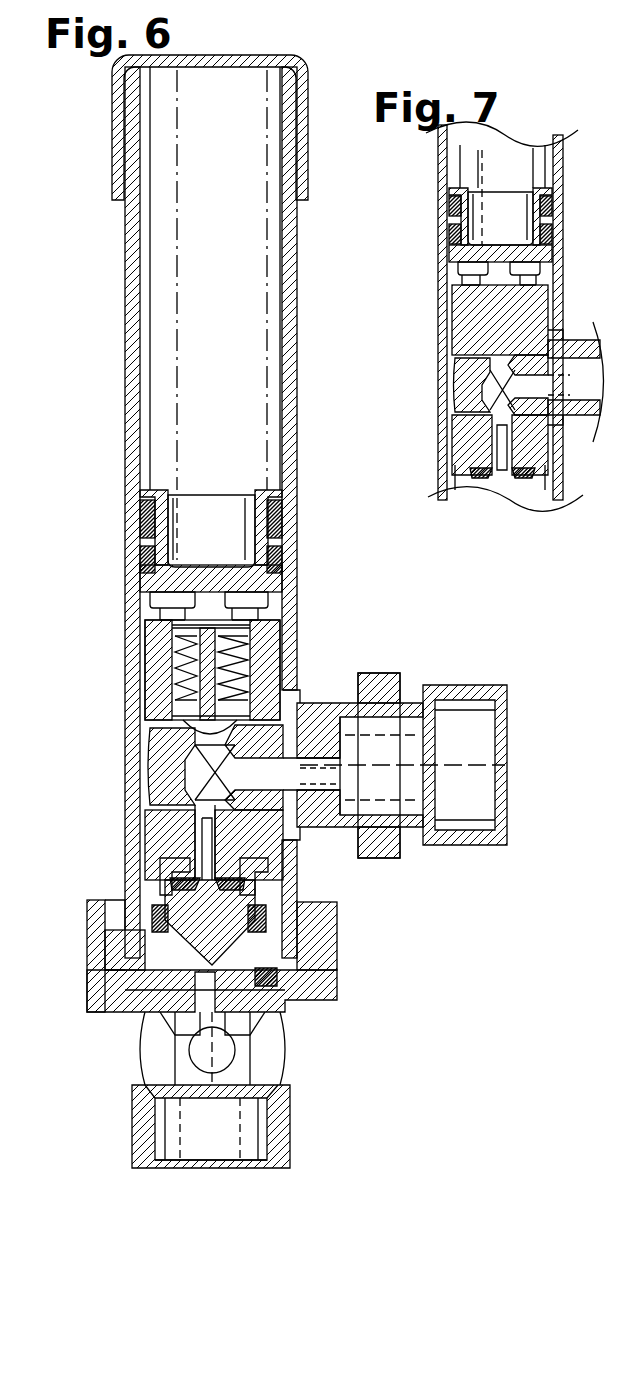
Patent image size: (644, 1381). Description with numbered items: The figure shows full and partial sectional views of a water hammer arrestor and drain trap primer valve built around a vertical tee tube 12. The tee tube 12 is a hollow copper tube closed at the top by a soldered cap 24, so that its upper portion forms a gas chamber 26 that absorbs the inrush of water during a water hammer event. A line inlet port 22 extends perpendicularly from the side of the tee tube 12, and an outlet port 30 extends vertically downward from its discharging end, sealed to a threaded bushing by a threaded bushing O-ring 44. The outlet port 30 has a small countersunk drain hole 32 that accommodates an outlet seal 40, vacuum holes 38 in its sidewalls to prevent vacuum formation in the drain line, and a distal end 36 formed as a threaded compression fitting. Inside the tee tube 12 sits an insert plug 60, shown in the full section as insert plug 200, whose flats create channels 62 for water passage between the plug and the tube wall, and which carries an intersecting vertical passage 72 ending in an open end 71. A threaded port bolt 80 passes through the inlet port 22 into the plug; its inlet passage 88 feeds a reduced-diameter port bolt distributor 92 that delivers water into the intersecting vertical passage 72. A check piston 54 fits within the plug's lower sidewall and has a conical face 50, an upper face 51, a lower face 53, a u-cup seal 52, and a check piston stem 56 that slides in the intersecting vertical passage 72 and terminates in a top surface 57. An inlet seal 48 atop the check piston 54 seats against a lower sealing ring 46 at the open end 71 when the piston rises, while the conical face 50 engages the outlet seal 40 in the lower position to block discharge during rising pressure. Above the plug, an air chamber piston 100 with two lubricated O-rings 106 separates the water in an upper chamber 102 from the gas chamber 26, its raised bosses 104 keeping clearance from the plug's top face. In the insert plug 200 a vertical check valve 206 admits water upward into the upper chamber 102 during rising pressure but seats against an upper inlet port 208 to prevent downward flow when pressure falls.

In FIG. 6, the tee tube 12 is at (125, 330).
In FIG. 6, the inlet port 22 is at (507, 840).
In FIG. 6, the cap 24 is at (111, 122).
In FIG. 6, the gas chamber 26 is at (215, 515).
In FIG. 7, the gas chamber 26 is at (497, 222).
In FIG. 6, the outlet port 30 is at (292, 1105).
In FIG. 6, the drain hole 32 is at (195, 1003).
In FIG. 6, the outlet port distal end 36 is at (135, 1170).
In FIG. 6, the vacuum holes 38 is at (272, 1050).
In FIG. 6, the outlet seal 40 is at (250, 1010).
In FIG. 6, the threaded bushing O-ring 44 is at (120, 978).
In FIG. 6, the lower sealing ring 46 is at (262, 860).
In FIG. 6, the inlet seal 48 is at (178, 885).
In FIG. 6, the conical face 50 is at (280, 1000).
In FIG. 6, the upper face 51 is at (268, 900).
In FIG. 6, the u-cup seal 52 is at (158, 910).
In FIG. 6, the lower face 53 is at (280, 975).
In FIG. 6, the check piston 54 is at (198, 930).
In FIG. 6, the check piston stem 56 is at (205, 840).
In FIG. 6, the top surface 57 is at (284, 774).
In FIG. 7, the insert plug 60 is at (465, 320).
In FIG. 6, the channels 62 is at (152, 860).
In FIG. 6, the open end 71 is at (140, 1000).
In FIG. 6, the intersecting vertical passage 72 is at (212, 808).
In FIG. 7, the intersecting vertical passage 72 is at (485, 415).
In FIG. 6, the port bolt 80 is at (340, 795).
In FIG. 6, the inlet passage 88 is at (290, 782).
In FIG. 7, the inlet passage 88 is at (545, 385).
In FIG. 6, the port bolt distributor 92 is at (200, 775).
In FIG. 6, the air chamber piston 100 is at (155, 577).
In FIG. 7, the air chamber piston 100 is at (540, 252).
In FIG. 6, the upper chamber 102 is at (155, 612).
In FIG. 7, the upper chamber 102 is at (532, 275).
In FIG. 6, the raised bosses 104 is at (258, 598).
In FIG. 6, the O-rings 106 is at (275, 557).
In FIG. 7, the O-rings 106 is at (552, 230).
In FIG. 6, the insert plug 200 is at (150, 702).
In FIG. 6, the vertical check valve 206 is at (180, 678).
In FIG. 6, the upper inlet port 208 is at (200, 730).